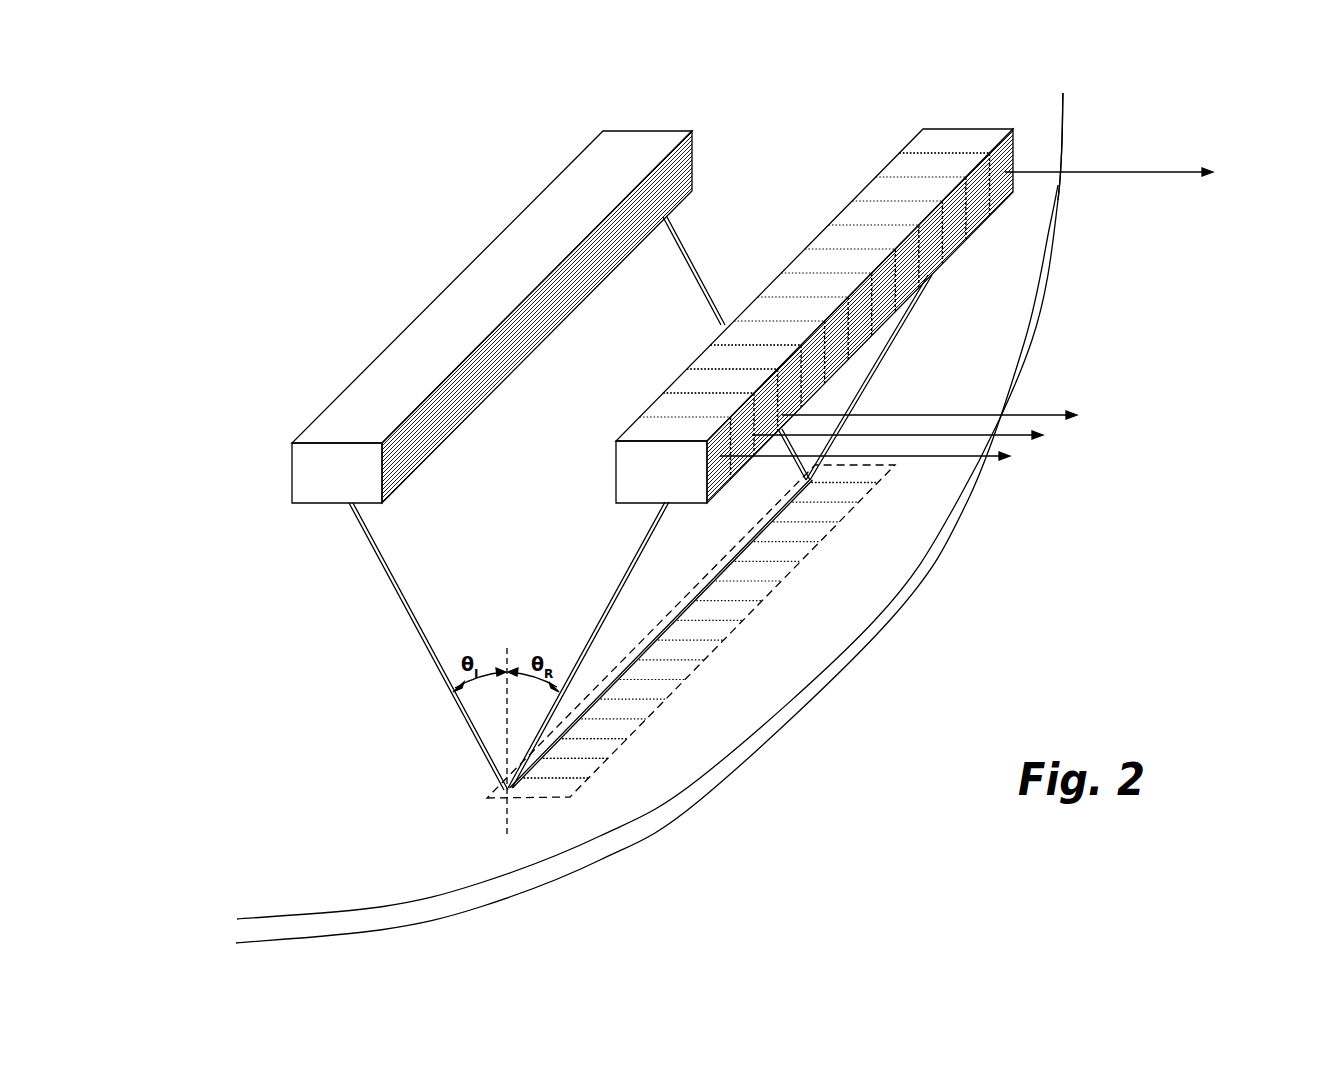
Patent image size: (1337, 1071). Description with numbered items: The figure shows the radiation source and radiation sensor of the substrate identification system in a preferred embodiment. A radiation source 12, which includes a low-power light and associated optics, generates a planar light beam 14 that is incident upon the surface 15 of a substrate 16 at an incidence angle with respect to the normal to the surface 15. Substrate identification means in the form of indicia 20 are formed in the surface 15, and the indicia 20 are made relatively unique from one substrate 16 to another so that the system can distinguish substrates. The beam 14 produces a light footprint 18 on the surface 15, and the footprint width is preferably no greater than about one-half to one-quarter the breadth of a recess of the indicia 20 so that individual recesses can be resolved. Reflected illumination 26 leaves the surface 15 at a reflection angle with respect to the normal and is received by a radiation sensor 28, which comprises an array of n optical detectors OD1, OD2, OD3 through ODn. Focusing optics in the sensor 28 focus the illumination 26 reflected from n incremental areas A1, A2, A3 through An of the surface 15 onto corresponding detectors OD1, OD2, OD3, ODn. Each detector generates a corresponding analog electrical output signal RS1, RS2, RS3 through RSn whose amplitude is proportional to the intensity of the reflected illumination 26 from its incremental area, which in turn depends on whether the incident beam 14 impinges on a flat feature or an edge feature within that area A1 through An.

The radiation source 12 is at (413, 353).
The light beam 14 is at (410, 620).
The surface 15 is at (381, 831).
The substrate 16 is at (898, 607).
The light footprint 18 is at (643, 657).
The indicia 20 is at (772, 613).
The reflected illumination 26 is at (618, 583).
The radiation sensor 28 is at (1033, 94).
The optical detector OD1 is at (637, 432).
The optical detector OD2 is at (662, 403).
The optical detector OD3 is at (688, 382).
The optical detector ODn is at (922, 140).
The output signal RS1 is at (888, 459).
The output signal RS2 is at (919, 439).
The output signal RS3 is at (951, 419).
The output signal RSn is at (1131, 176).
The incremental area A1 is at (573, 790).
The incremental area A2 is at (597, 770).
The incremental area A3 is at (615, 748).
The incremental area An is at (885, 473).